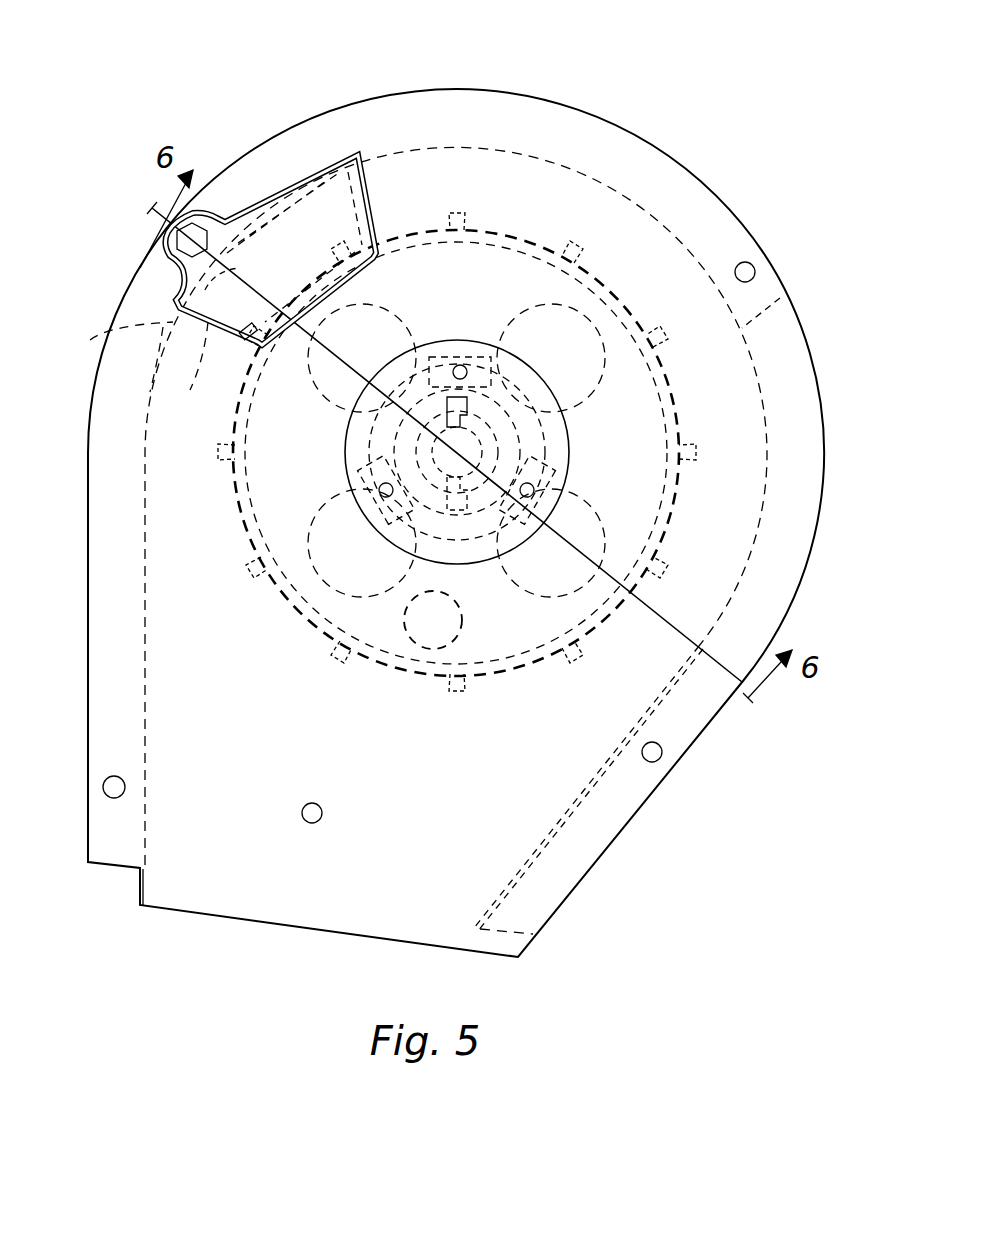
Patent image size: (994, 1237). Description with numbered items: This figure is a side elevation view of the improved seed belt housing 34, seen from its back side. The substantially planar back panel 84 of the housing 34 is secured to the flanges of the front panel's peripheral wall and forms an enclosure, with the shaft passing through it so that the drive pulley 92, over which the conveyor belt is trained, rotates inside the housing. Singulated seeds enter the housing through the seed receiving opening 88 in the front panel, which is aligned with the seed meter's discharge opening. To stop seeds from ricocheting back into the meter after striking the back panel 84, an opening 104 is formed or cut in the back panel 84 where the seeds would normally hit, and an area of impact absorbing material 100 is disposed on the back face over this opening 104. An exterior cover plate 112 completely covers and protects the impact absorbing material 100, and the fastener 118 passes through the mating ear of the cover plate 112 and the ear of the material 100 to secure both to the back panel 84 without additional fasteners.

The seed belt housing 34 is at (737, 80).
The back panel 84 is at (613, 120).
The seed receiving opening 88 is at (197, 379).
The drive pulley 92 is at (792, 295).
The impact absorbing material 100 is at (237, 212).
The opening 104 is at (90, 340).
The exterior cover plate 112 is at (323, 213).
The fastener 118 is at (177, 242).